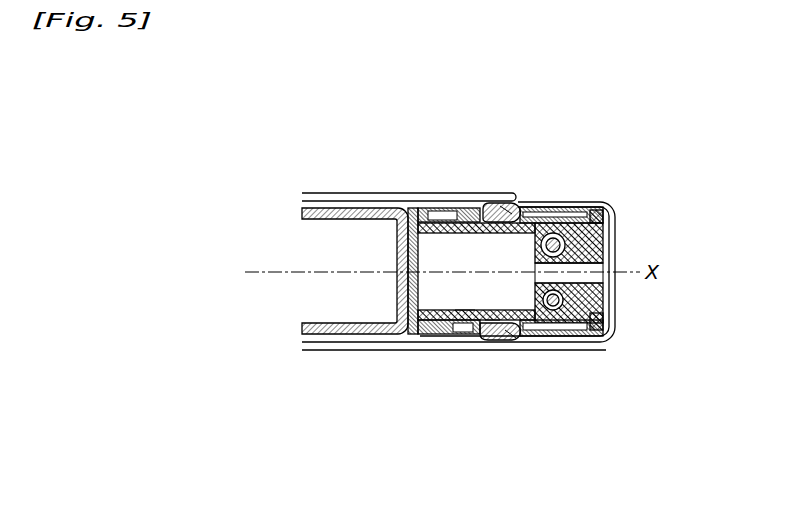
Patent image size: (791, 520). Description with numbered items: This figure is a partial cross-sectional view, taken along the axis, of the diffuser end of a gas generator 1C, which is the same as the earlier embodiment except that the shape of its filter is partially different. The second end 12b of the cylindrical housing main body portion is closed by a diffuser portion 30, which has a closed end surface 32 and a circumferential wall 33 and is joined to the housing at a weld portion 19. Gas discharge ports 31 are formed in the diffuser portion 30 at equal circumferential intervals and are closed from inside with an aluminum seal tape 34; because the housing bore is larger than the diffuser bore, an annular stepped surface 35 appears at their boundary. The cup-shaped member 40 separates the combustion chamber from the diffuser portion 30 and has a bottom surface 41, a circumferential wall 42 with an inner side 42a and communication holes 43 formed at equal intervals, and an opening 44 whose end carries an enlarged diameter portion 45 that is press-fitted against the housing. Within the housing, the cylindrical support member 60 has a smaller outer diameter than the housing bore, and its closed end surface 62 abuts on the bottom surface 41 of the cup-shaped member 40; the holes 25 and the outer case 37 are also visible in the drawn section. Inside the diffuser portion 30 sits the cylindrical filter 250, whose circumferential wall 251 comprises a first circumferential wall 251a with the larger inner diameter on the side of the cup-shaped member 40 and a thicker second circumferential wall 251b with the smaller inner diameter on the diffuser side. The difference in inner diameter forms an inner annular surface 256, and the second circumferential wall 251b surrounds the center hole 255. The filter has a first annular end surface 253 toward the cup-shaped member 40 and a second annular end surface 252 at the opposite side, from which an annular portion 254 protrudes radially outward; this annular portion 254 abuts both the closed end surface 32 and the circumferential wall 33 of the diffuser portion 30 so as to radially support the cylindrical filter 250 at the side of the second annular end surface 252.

The gas generator 1C is at (353, 157).
The second end 12b is at (517, 346).
The weld portion 19 is at (516, 205).
The opening 25 is at (427, 209).
The diffuser portion 30 is at (506, 308).
The gas discharge ports 31 is at (558, 210).
The closed end surface 32 is at (604, 250).
The circumferential wall 33 is at (591, 344).
The aluminum seal tape 34 is at (548, 263).
The annular stepped surface 35 is at (491, 340).
The outer cover 37 is at (592, 205).
The cup-shaped member 40 is at (402, 202).
The bottom surface 41 is at (419, 236).
The circumferential wall 42 is at (457, 340).
The lower wall inner surface 42a is at (462, 314).
The communication holes 43 is at (447, 209).
The opening 44 is at (489, 315).
The enlarged diameter portion 45 is at (488, 202).
The cylindrical support member 60 is at (318, 196).
The closed end surface 62 is at (397, 285).
The cylindrical filter 250 is at (505, 204).
The circumferential wall 251 is at (632, 457).
The first circumferential wall 251a is at (488, 341).
The second circumferential wall 251b is at (597, 344).
The second annular end surface 252 is at (605, 300).
The first annular end surface 253 is at (425, 344).
The annular portion 254 is at (601, 218).
The center hole 255 is at (582, 268).
The inner annular surface 256 is at (540, 236).